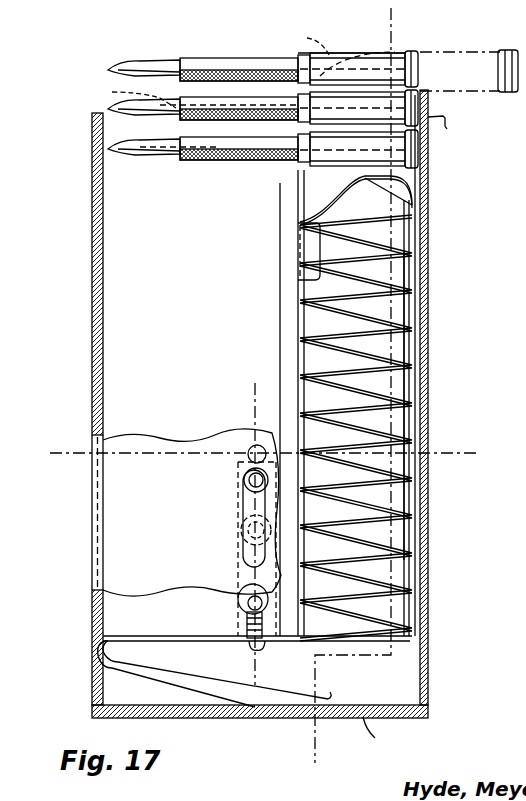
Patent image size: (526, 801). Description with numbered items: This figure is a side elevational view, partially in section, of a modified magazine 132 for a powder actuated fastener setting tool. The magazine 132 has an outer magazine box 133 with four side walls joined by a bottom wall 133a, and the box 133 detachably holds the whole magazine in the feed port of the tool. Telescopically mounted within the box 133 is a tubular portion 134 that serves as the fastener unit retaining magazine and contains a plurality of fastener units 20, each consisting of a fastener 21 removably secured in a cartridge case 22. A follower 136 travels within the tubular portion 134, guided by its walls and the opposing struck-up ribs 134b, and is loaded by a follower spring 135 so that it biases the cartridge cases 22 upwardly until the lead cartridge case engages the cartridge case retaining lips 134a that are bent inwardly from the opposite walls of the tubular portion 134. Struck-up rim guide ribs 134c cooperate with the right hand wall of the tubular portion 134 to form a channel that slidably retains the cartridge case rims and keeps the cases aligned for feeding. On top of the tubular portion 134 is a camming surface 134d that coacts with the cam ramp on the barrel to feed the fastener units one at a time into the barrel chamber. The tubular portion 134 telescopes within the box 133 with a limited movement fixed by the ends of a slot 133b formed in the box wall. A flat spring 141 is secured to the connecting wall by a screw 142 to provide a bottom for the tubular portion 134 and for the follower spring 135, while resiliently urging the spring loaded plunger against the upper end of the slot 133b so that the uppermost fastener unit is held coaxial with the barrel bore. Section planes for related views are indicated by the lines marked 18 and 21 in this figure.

The section line 18- 18 is at (389, 18).
The powder actuated fastener unit 20 is at (232, 58).
The fastener 21 is at (60, 451).
The cartridge case 22 is at (254, 393).
The magazine 132 is at (447, 293).
The outer magazine box 133 is at (447, 120).
The bottom wall 133a is at (395, 736).
The slot 133b is at (246, 500).
The tubular portion 134 is at (102, 357).
The cartridge case retaining lip 134a is at (396, 50).
The struck-up rib 134b is at (282, 196).
The rim guide rib 134c is at (409, 500).
The camming surface 134d is at (191, 66).
The follower spring 135 is at (328, 375).
The follower 136 is at (430, 188).
The flat spring 141 is at (158, 678).
The screw 142 is at (258, 644).